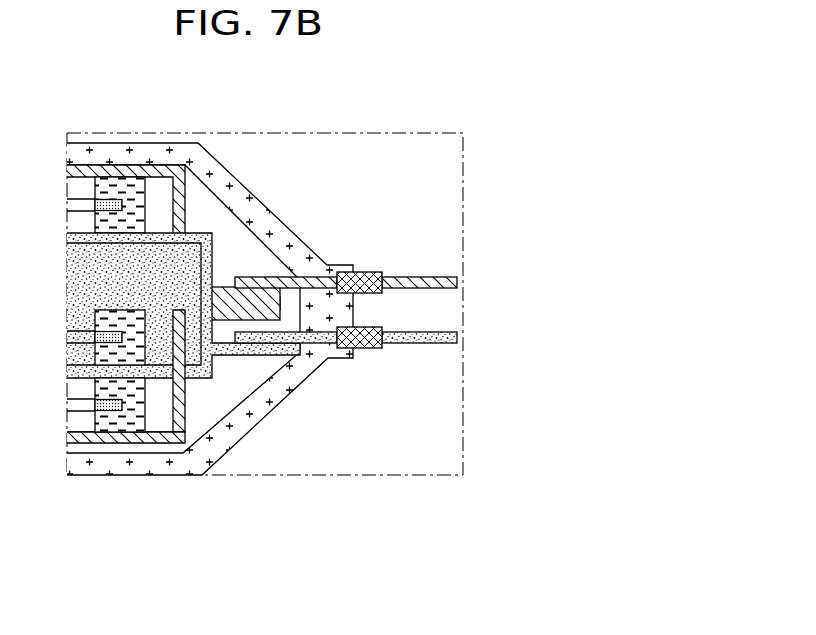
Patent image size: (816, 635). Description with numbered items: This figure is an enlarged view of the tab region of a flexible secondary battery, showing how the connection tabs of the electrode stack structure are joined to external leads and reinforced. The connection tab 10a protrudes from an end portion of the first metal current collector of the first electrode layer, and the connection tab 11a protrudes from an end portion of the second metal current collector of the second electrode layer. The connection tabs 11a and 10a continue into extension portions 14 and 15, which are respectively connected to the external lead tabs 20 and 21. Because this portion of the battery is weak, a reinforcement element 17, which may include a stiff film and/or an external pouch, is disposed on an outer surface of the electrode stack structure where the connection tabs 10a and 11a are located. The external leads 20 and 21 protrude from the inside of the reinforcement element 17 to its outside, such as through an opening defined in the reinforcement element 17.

The reinforcement element 17 is at (123, 143).
The connection tab 10a is at (200, 233).
The connection tab 11a is at (175, 437).
The extension portion 14 is at (272, 278).
The extension portion 15 is at (260, 347).
The lead tab 20 is at (415, 282).
The lead tab 21 is at (422, 343).